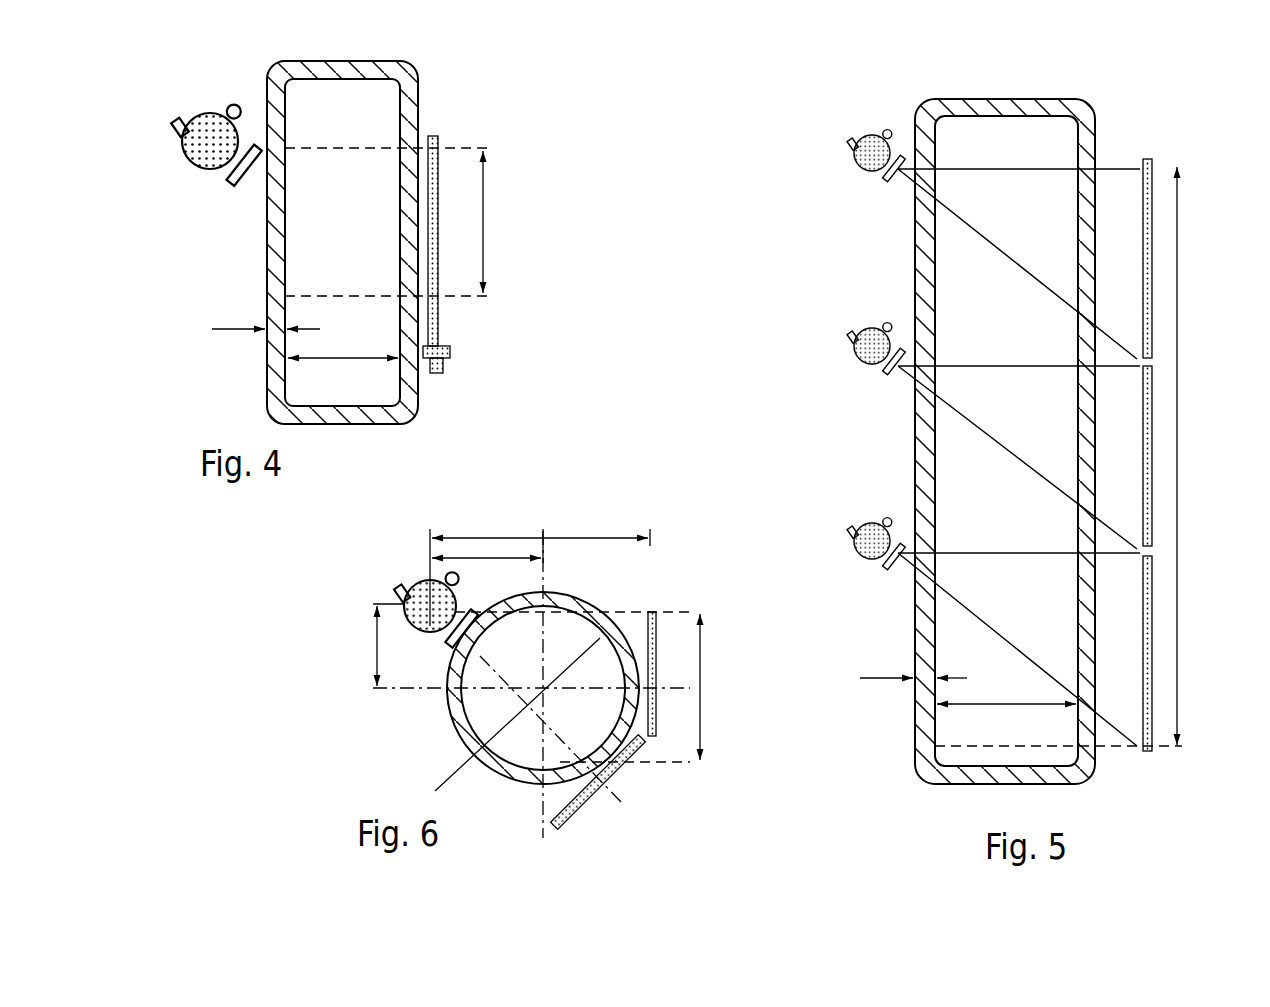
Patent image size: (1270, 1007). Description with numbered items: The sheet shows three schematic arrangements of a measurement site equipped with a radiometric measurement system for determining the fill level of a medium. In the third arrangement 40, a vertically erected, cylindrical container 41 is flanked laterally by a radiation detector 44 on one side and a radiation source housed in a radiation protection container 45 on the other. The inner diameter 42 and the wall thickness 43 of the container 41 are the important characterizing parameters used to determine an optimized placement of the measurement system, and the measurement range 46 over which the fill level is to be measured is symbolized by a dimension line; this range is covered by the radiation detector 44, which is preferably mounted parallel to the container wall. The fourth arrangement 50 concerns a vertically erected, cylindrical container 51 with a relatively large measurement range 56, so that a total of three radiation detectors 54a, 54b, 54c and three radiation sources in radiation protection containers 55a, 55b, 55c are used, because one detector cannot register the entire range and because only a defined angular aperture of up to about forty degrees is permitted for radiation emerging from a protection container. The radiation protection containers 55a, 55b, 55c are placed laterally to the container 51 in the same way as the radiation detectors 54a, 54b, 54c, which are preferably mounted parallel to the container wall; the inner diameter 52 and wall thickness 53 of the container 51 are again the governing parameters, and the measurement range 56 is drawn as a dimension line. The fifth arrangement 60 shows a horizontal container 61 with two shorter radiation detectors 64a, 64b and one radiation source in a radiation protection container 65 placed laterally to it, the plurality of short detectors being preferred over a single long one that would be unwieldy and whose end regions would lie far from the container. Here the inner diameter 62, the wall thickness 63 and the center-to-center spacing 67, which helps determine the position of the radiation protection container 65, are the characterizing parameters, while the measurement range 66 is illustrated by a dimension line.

In FIG. 4, the third arrangement 40 is at (155, 229).
In FIG. 4, the container 41 is at (405, 72).
In FIG. 4, the inner diameter 42 is at (326, 358).
In FIG. 4, the wall thickness 43 is at (224, 328).
In FIG. 4, the radiation detector 44 is at (438, 322).
In FIG. 4, the radiation protection container 45 is at (212, 116).
In FIG. 4, the measurement range 46 is at (483, 200).
In FIG. 5, the fourth arrangement 50 is at (793, 283).
In FIG. 5, the container 51 is at (1080, 105).
In FIG. 5, the inner diameter 52 is at (975, 704).
In FIG. 5, the wall thickness 53 is at (884, 678).
In FIG. 5, the radiation detector 54a is at (1152, 240).
In FIG. 5, the radiation detector 54b is at (1152, 420).
In FIG. 5, the radiation detector 54c is at (1152, 655).
In FIG. 5, the radiation protection container 55a is at (862, 168).
In FIG. 5, the radiation protection container 55b is at (862, 360).
In FIG. 5, the radiation protection container 55c is at (862, 555).
In FIG. 5, the measurement range 56 is at (1177, 540).
In FIG. 6, the fifth arrangement 60 is at (610, 498).
In FIG. 6, the container 61 is at (511, 776).
In FIG. 6, the inner diameter 62 is at (576, 666).
In FIG. 6, the wall thickness 63 is at (458, 767).
In FIG. 6, the radiation detector 64a is at (656, 630).
In FIG. 6, the radiation detector 64b is at (578, 806).
In FIG. 6, the radiation protection container 65 is at (406, 590).
In FIG. 6, the measurement range 66 is at (700, 690).
In FIG. 6, the center-to-center spacing 67 is at (486, 546).